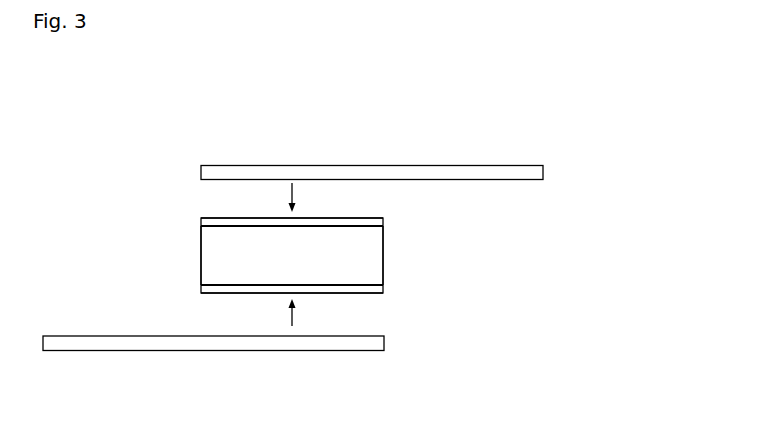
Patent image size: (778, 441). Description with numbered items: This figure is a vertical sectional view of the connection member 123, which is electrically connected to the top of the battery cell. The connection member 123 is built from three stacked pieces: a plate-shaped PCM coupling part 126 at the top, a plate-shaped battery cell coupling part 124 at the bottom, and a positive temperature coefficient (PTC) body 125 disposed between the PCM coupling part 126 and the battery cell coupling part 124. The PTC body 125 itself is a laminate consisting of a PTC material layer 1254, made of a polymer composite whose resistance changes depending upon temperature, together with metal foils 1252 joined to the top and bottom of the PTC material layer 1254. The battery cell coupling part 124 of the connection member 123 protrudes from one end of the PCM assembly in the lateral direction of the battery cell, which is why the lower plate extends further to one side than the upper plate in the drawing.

The connection member 123 is at (165, 118).
The battery cell coupling part 124 is at (202, 350).
The positive temperature coefficient (PTC) body 125 is at (398, 238).
The PCM coupling part 126 is at (312, 165).
The metal foils 1252 is at (200, 289).
The PTC material layer 1254 is at (383, 261).